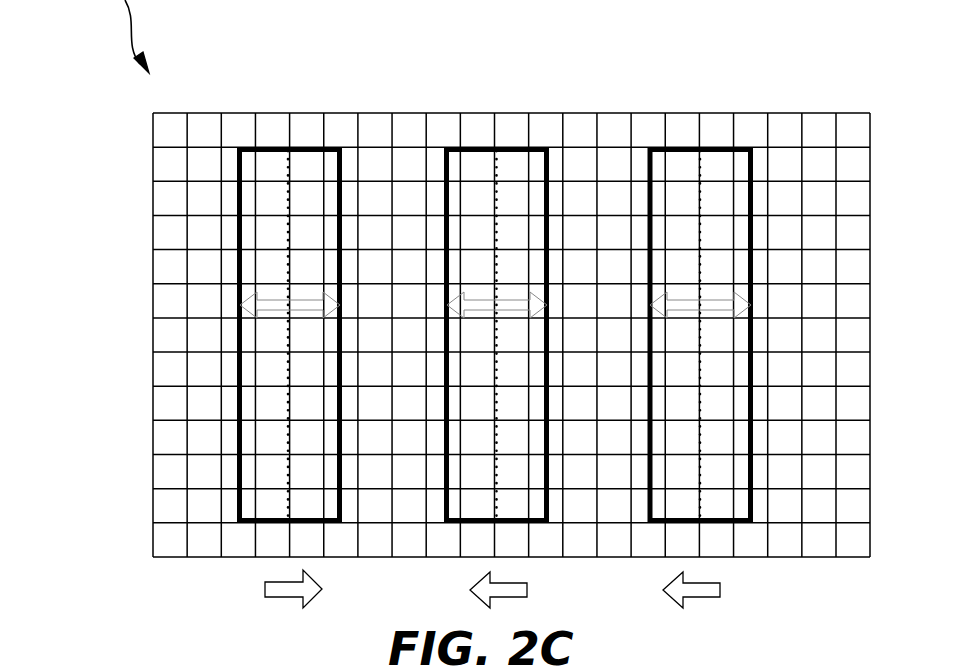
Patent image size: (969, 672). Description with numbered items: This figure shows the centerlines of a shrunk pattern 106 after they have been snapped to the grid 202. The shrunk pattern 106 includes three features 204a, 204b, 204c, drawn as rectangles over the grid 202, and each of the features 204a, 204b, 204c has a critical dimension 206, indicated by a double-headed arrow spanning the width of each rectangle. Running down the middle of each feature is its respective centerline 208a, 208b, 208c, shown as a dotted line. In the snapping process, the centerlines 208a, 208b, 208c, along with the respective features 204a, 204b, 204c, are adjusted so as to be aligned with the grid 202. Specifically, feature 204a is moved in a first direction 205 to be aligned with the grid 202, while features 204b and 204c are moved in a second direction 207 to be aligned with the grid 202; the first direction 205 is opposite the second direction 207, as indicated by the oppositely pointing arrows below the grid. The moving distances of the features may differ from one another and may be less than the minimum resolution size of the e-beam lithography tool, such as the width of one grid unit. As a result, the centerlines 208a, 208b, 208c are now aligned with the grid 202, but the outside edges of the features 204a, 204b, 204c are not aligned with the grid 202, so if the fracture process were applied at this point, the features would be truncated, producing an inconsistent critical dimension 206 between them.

The grid 202 is at (153, 181).
The feature 204a is at (287, 147).
The feature 204b is at (508, 147).
The feature 204c is at (698, 147).
The centerline 208a is at (287, 197).
The centerline 208b is at (497, 195).
The centerline 208c is at (700, 195).
The critical dimension 206 is at (238, 303).
The first direction 205 is at (265, 589).
The second direction 207 is at (470, 588).
The shrunk pattern 106 is at (117, 671).